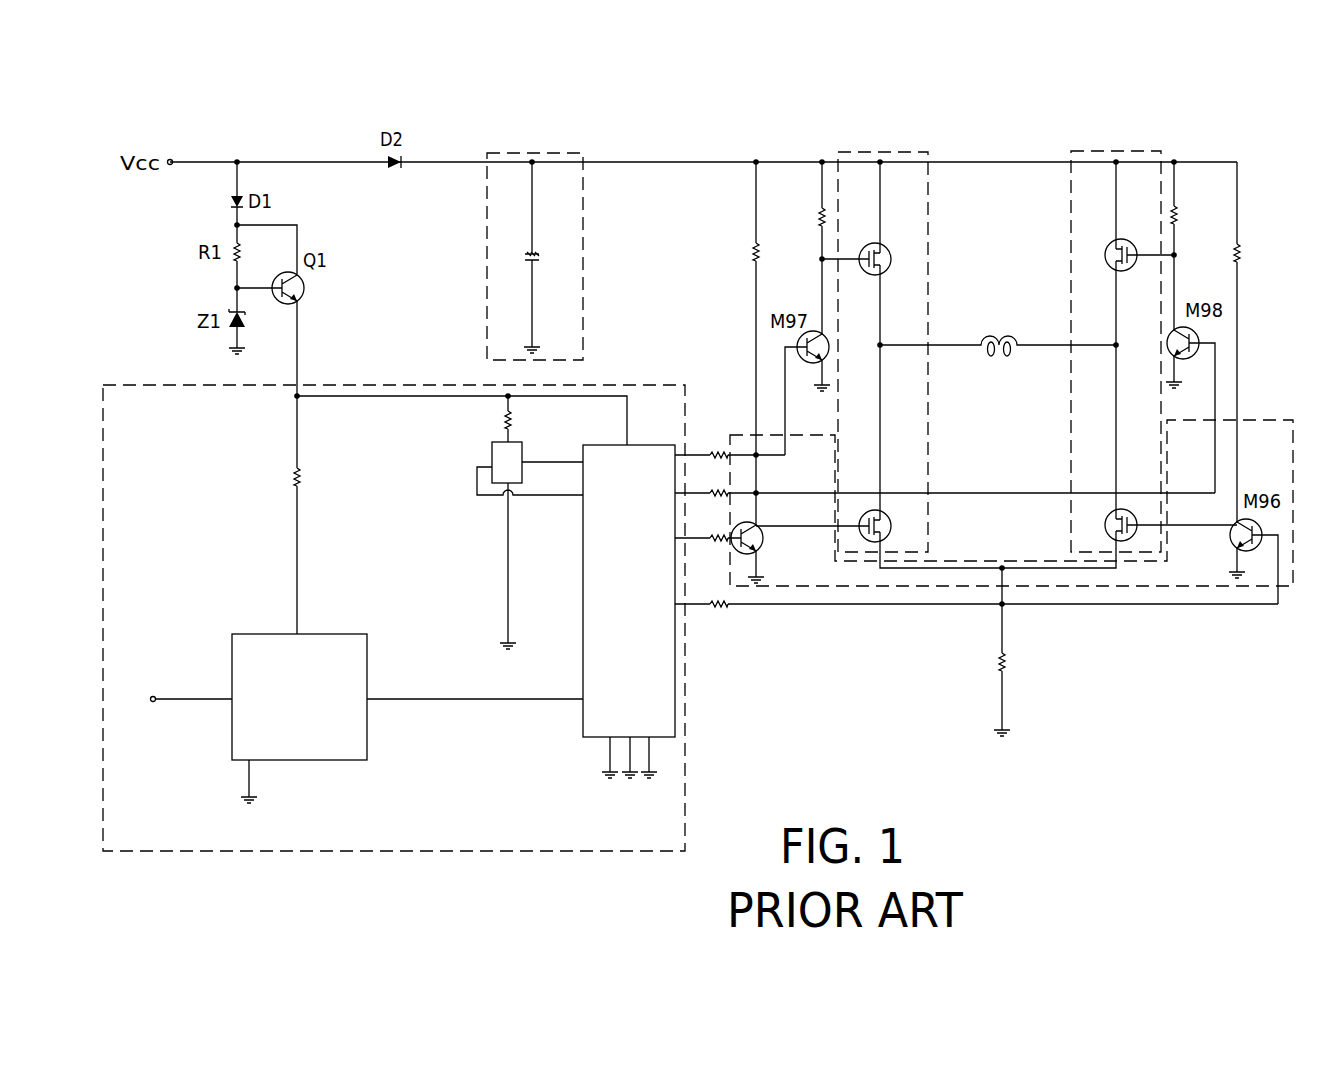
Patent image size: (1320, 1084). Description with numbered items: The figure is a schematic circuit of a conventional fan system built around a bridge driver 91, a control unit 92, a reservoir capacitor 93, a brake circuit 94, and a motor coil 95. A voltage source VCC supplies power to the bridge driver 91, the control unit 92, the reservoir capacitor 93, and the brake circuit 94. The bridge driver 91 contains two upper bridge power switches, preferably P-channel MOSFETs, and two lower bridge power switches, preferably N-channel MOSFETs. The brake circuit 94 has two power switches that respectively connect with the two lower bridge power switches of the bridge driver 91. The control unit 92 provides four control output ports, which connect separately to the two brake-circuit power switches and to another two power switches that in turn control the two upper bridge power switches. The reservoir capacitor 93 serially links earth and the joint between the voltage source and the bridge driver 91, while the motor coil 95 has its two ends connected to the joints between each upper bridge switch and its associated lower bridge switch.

The bridge driver 91 is at (928, 186).
The control unit 92 is at (428, 852).
The reservoir capacitor 93 is at (585, 192).
The brake circuit 94 is at (1290, 398).
The motor coil 95 is at (1000, 333).